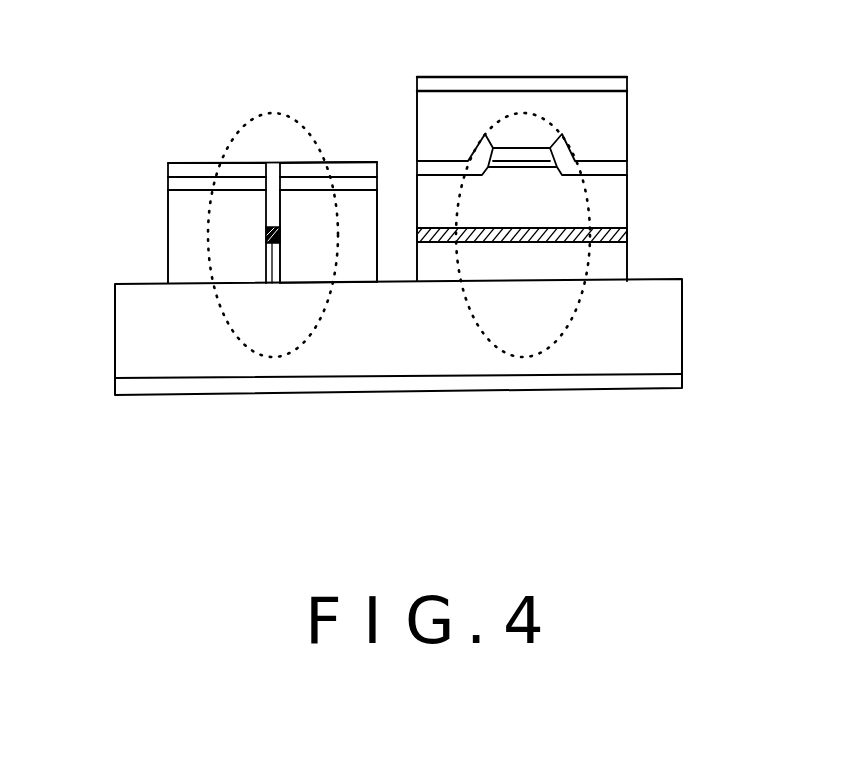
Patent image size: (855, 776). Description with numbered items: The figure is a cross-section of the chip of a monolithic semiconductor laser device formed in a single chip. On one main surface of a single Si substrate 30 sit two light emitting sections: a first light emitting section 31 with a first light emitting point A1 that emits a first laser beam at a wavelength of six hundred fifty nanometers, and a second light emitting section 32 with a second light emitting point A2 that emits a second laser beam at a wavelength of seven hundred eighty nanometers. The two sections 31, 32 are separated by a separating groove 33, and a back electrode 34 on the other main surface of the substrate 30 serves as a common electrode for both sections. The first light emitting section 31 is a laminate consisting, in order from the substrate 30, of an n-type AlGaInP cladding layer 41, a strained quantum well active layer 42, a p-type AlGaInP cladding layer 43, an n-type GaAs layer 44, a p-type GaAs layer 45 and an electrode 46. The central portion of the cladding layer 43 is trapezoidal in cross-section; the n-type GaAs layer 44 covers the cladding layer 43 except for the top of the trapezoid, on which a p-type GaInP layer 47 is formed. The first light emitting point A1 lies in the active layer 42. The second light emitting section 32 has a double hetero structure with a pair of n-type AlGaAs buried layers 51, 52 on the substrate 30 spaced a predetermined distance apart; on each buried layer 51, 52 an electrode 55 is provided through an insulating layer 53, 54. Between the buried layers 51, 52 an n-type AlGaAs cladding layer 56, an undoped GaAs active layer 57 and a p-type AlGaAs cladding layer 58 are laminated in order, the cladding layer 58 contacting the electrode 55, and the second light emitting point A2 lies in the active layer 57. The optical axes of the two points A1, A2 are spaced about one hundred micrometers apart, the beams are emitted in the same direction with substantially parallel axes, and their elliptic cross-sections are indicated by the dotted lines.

The Si substrate 30 is at (115, 337).
The first light emitting section 31 is at (614, 69).
The second light emitting section 32 is at (160, 149).
The separating groove 33 is at (403, 148).
The back electrode 34 is at (412, 392).
The n-type AlGaInP cladding layer 41 is at (628, 262).
The strained quantum well active layer 42 is at (628, 233).
The p-type AlGaInP cladding layer 43 is at (628, 198).
The n-type GaAs layer 44 is at (628, 166).
The p-type GaAs layer 45 is at (628, 126).
The electrode 46 is at (464, 77).
The p-type GaInP layer 47 is at (518, 161).
The n-type AlGaAs buried layer 51 is at (168, 231).
The n-type AlGaAs buried layer 52 is at (370, 212).
The insulating layer 53 is at (168, 187).
The insulating layer 54 is at (348, 180).
The electrode 55 is at (187, 163).
The n-type AlGaAs cladding layer 56 is at (268, 284).
The undoped GaAs active layer 57 is at (266, 237).
The p-type AlGaAs cladding layer 58 is at (272, 207).
The first light emitting point A1 is at (524, 242).
The second light emitting point A2 is at (266, 241).